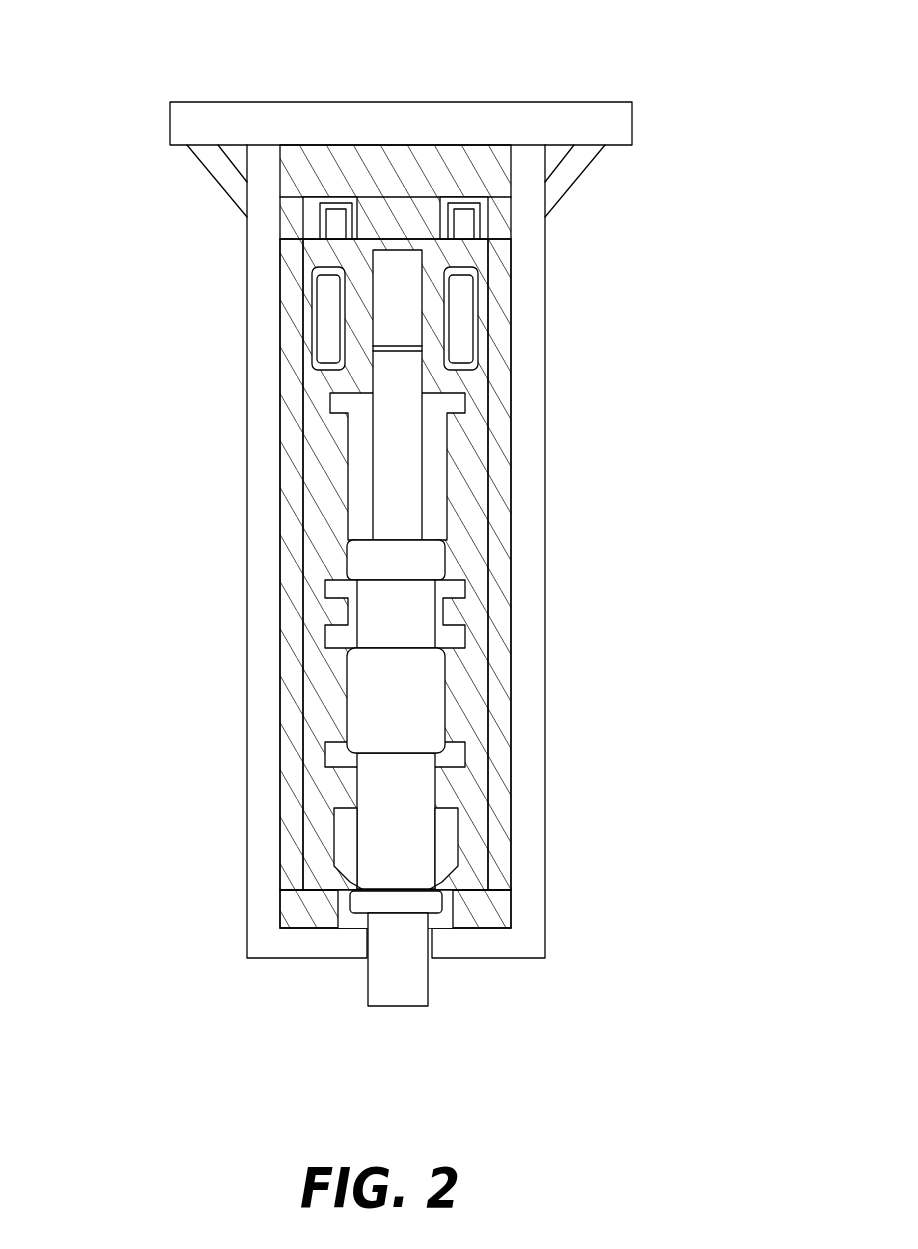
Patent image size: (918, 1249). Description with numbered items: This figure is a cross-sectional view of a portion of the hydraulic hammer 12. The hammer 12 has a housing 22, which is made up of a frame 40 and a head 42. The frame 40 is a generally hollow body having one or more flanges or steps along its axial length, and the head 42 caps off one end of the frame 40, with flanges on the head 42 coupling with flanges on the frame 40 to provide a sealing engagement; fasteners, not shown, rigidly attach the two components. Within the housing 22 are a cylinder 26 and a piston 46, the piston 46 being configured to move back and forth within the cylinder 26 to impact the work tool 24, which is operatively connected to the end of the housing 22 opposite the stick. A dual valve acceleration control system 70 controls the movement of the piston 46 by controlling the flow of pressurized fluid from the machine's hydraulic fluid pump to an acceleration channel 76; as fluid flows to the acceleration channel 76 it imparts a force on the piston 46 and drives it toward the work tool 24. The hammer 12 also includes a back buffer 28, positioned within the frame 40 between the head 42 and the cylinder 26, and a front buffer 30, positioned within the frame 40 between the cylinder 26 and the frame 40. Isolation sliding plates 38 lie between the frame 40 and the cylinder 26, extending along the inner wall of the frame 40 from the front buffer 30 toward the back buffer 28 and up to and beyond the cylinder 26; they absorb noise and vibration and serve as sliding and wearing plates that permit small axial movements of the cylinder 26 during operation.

The hammer 12 is at (680, 252).
The head 42 is at (140, 73).
The housing 22 is at (592, 585).
The back buffer 28 is at (485, 175).
The frame 40 is at (527, 708).
The isolation sliding plates 38 is at (285, 553).
The cylinder 26 is at (447, 479).
The dual valve acceleration control system 70 is at (317, 297).
The acceleration channel 76 is at (454, 404).
The piston 46 is at (410, 708).
The front buffer 30 is at (473, 921).
The work tool 24 is at (393, 971).